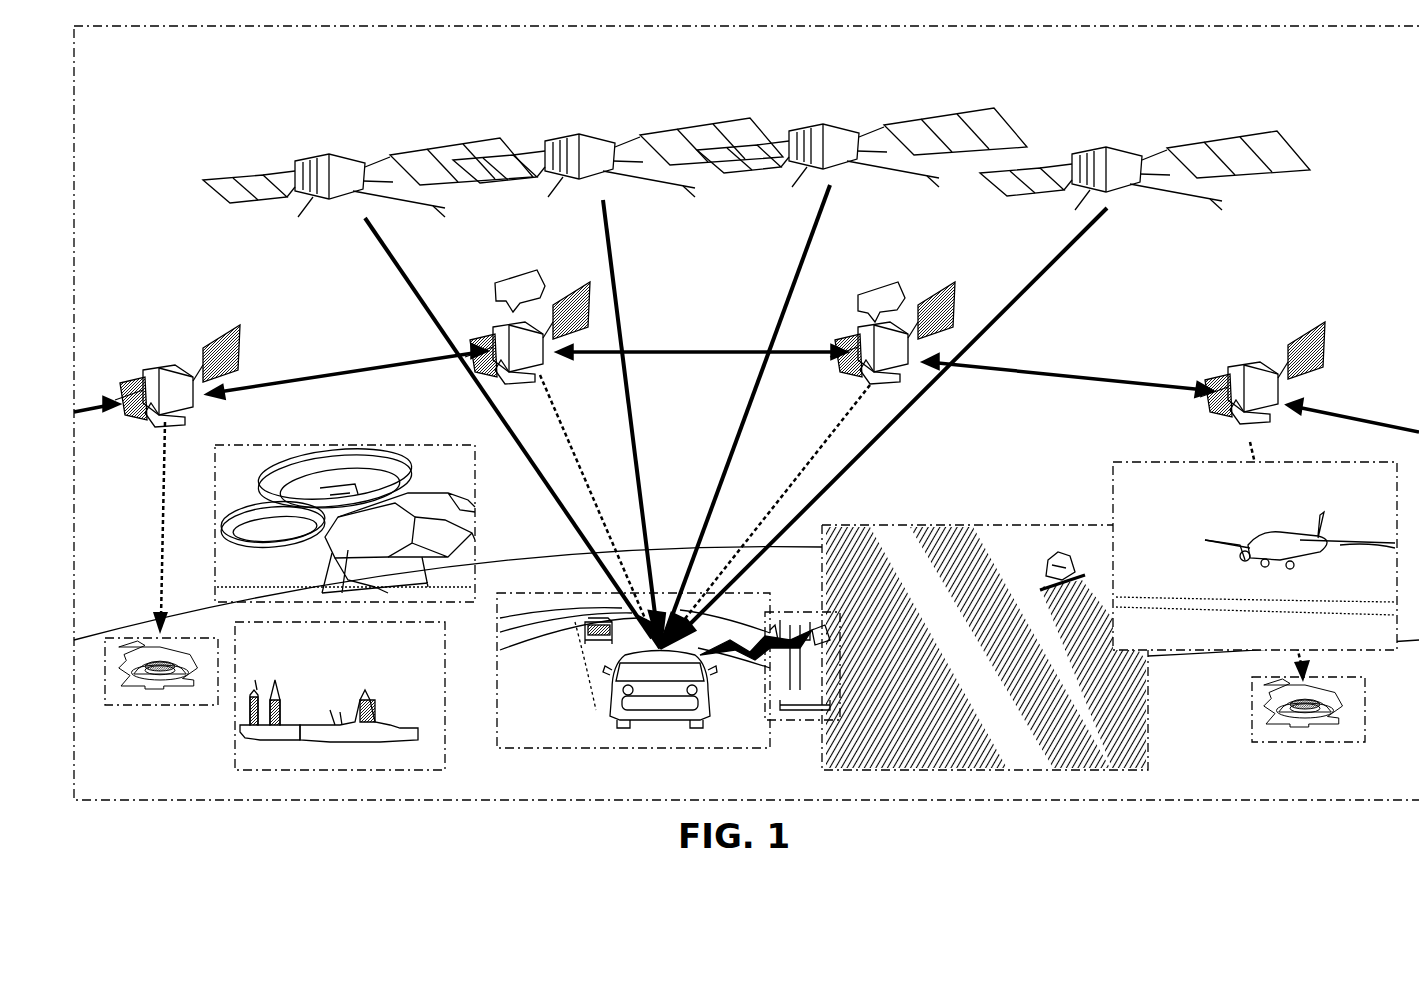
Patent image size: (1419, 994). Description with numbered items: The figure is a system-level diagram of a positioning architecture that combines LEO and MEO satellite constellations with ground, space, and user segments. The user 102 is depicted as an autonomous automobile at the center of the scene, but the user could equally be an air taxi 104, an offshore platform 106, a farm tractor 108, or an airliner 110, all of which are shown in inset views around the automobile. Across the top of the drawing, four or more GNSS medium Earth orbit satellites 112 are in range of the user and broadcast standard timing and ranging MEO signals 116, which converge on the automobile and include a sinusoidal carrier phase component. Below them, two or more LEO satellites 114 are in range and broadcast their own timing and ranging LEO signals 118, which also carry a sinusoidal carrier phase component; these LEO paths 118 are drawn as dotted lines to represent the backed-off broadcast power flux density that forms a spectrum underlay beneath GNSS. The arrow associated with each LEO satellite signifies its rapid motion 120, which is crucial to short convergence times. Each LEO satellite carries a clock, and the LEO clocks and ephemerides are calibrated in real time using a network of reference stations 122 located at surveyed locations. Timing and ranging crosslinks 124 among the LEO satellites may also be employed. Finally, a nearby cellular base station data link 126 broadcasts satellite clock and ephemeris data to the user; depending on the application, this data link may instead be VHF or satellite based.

The user 102 is at (633, 670).
The air taxi 104 is at (345, 522).
The offshore platform 106 is at (340, 696).
The farm tractor 108 is at (985, 647).
The airliner 110 is at (1255, 556).
The GNSS medium Earth orbit (MEO) satellites 112 is at (355, 172).
The LEO satellites 114 is at (170, 378).
The MEO signals 116 is at (736, 416).
The LEO signals 118 is at (730, 528).
The rapid motion 120 is at (700, 296).
The reference stations 122 is at (735, 690).
The timing and ranging crosslinks 124 is at (746, 388).
The cellular base station data link 126 is at (770, 666).